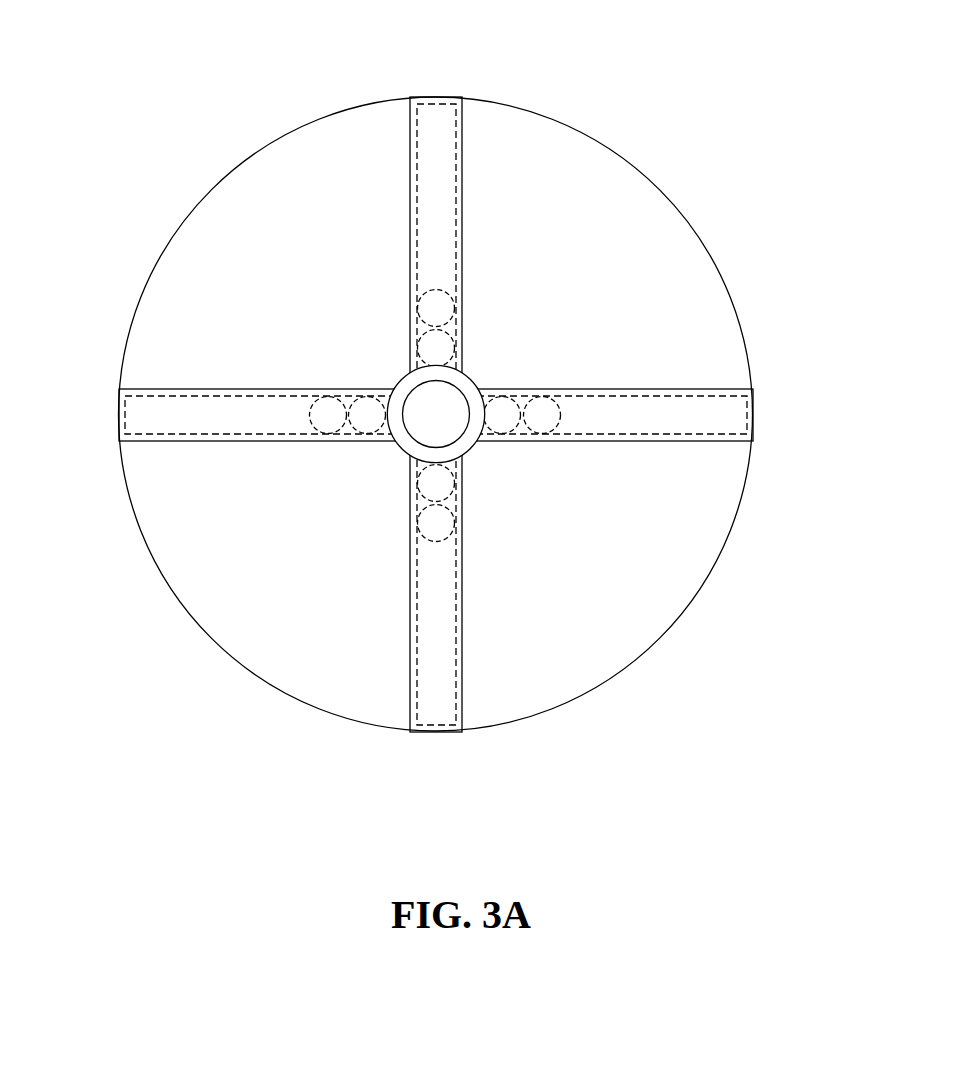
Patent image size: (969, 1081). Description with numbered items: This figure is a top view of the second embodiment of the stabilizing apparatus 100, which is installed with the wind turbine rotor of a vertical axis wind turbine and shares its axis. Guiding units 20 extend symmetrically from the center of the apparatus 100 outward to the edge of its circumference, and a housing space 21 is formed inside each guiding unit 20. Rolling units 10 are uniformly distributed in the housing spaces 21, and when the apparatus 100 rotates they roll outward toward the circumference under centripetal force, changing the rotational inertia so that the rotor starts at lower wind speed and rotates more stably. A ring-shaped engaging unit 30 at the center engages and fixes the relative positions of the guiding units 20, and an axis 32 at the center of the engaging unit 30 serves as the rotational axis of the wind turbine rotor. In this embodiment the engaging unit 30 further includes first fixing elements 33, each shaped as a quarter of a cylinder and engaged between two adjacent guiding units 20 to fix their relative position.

The apparatus 100 is at (422, 398).
The first fixing element 33 is at (615, 273).
The guiding unit 20 is at (405, 409).
The housing space 21 is at (163, 413).
The rolling unit 10 is at (368, 415).
The engaging unit 30 is at (296, 572).
The axis 32 is at (438, 433).